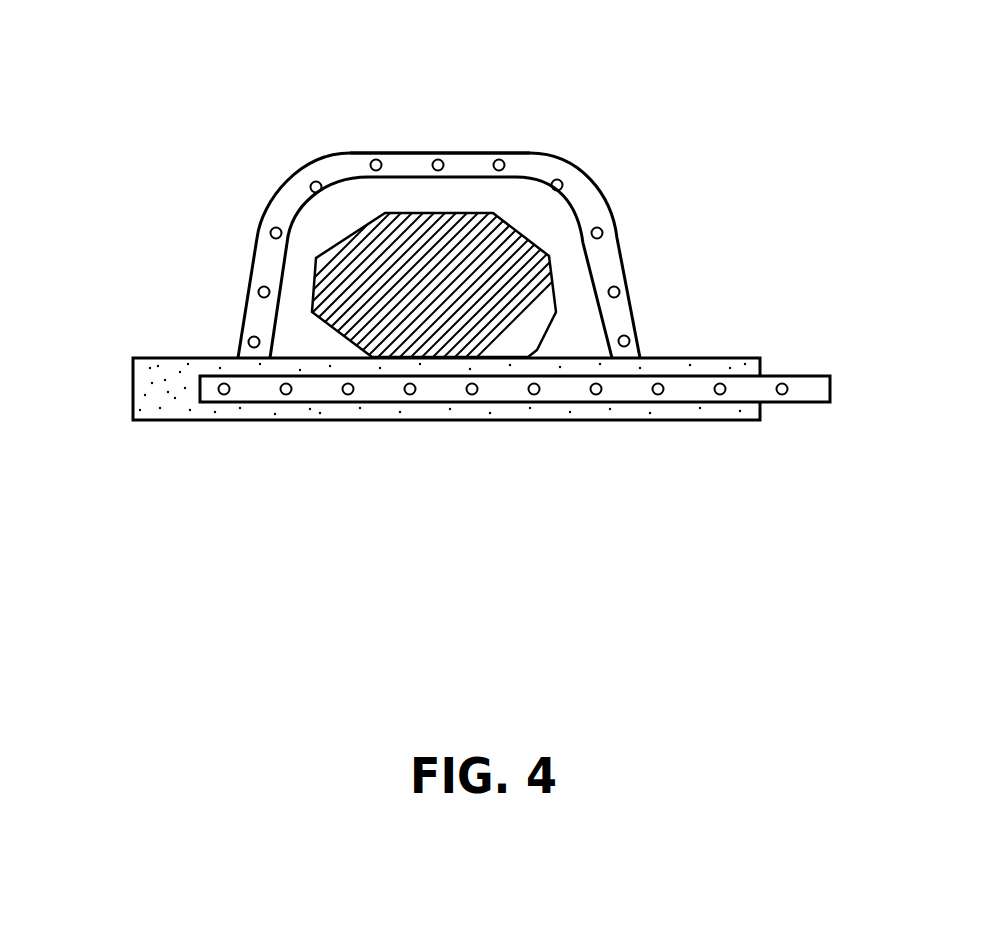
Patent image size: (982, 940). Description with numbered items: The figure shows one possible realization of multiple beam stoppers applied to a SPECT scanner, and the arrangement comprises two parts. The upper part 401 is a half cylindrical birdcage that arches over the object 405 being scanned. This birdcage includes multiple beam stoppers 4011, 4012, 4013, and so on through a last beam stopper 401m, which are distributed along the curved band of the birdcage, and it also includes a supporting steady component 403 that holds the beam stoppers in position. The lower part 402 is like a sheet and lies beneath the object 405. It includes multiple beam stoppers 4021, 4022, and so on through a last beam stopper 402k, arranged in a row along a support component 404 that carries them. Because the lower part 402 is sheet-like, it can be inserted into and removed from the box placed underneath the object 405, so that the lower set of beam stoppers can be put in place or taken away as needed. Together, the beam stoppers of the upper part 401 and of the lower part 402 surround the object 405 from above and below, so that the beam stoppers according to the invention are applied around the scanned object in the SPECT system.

The upper part 401 is at (528, 145).
The beam stopper 401m is at (632, 335).
The beam stopper 4011 is at (248, 340).
The beam stopper 4012 is at (259, 292).
The beam stopper 4013 is at (272, 233).
The lower part 402 is at (812, 350).
The beam stopper 402k is at (783, 396).
The beam stopper 4021 is at (219, 396).
The beam stopper 4022 is at (284, 396).
The supporting steady component 403 is at (411, 165).
The support component 404 is at (432, 402).
The object 405 is at (463, 225).